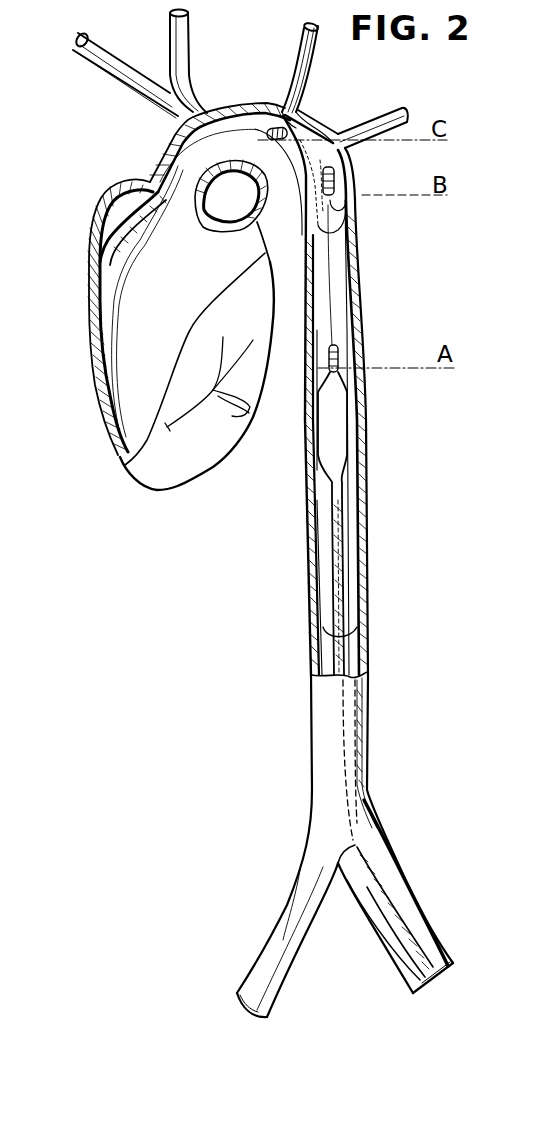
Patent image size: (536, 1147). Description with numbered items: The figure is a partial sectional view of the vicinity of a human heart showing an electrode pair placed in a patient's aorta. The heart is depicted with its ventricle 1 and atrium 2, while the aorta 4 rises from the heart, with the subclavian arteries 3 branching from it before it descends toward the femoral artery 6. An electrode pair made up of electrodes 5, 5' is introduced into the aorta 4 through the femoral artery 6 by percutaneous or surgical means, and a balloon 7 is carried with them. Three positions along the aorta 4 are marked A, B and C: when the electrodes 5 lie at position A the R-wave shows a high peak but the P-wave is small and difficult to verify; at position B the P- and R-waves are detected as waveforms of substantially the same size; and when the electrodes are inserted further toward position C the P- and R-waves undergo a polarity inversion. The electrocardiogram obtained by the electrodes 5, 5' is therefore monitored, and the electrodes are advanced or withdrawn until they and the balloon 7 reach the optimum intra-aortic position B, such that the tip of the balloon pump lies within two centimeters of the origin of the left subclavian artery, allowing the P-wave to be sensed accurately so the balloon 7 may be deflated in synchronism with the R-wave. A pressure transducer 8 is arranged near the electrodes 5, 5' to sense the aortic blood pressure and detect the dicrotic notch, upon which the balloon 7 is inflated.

The ventricle 1 is at (165, 473).
The atrium 2 is at (90, 203).
The subclavian arteries 3 is at (373, 119).
The aorta 4 is at (364, 258).
The electrode 5 is at (337, 144).
The electrode 5' is at (361, 215).
The femoral artery 6 is at (420, 913).
The balloon 7 is at (335, 295).
The pressure transducer 8 is at (318, 138).